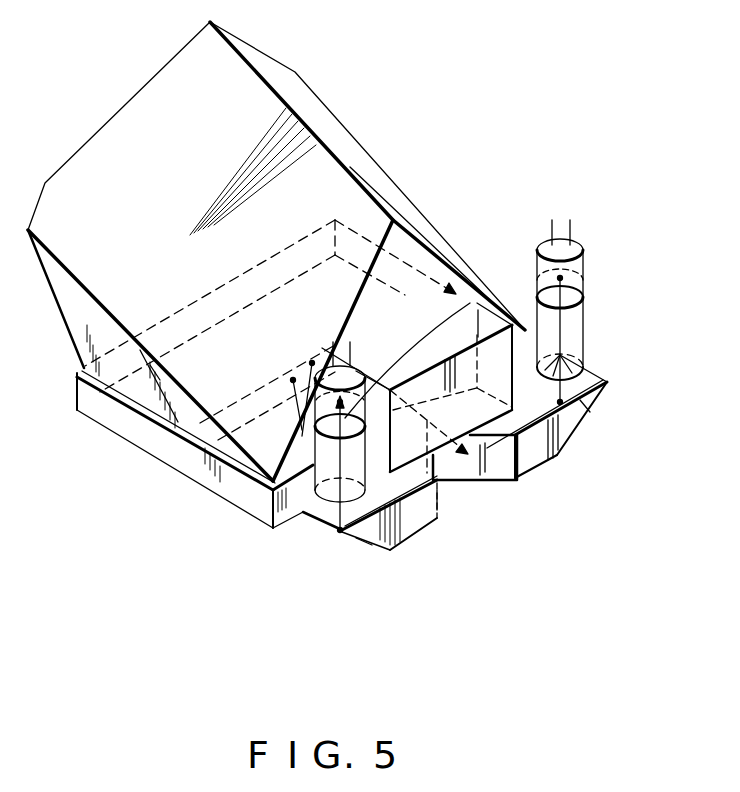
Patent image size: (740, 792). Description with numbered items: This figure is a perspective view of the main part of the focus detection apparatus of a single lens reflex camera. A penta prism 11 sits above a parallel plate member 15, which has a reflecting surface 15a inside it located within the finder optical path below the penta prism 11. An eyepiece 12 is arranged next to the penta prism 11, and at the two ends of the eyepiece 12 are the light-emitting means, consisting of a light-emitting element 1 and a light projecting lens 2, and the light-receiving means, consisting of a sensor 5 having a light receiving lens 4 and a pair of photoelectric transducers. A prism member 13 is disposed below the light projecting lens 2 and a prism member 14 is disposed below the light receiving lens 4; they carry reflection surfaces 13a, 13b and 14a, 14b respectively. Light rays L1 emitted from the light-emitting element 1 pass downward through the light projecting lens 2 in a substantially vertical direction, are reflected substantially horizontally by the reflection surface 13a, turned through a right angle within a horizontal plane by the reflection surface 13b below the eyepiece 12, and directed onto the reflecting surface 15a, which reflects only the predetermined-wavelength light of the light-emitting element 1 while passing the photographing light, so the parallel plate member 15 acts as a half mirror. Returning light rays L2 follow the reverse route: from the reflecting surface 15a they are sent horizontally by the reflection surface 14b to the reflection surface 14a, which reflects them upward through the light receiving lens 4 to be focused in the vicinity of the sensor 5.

The light-emitting element 1 is at (312, 366).
The light projecting lens 2 is at (303, 523).
The light receiving lens 4 is at (583, 316).
The sensor 5 is at (583, 262).
The penta prism 11 is at (298, 80).
The eyepiece 12 is at (477, 293).
The prism member 13 is at (407, 523).
The reflection surface 13a is at (376, 526).
The reflection surface 13b is at (437, 493).
The prism member 14 is at (533, 455).
The reflection surface 14a is at (575, 418).
The reflection surface 14b is at (493, 463).
The parallel plate member 15 is at (122, 418).
The reflecting surface 15a is at (177, 447).
The light rays L1 is at (293, 384).
The light rays L2 is at (395, 397).